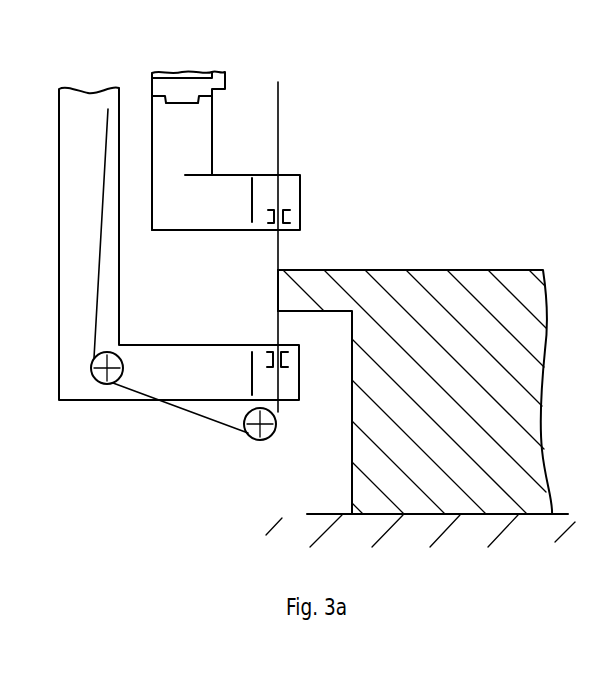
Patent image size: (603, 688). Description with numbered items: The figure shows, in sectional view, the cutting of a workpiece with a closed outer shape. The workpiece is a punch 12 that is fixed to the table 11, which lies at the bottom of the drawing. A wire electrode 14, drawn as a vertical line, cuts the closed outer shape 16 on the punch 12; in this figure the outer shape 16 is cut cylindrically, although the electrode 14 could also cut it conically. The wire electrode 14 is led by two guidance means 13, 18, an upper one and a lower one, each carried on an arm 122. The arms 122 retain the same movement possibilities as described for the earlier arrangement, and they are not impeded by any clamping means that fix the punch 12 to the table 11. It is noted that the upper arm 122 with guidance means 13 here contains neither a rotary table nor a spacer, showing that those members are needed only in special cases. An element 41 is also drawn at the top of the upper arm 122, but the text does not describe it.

The table 11 is at (490, 526).
The punch 12 is at (422, 275).
The guidance means 13 is at (289, 213).
The wire electrode 14 is at (280, 107).
The closed outer shape 16 is at (277, 292).
The guidance means 18 is at (268, 352).
The stop 41 is at (190, 75).
The arms 122 is at (197, 230).